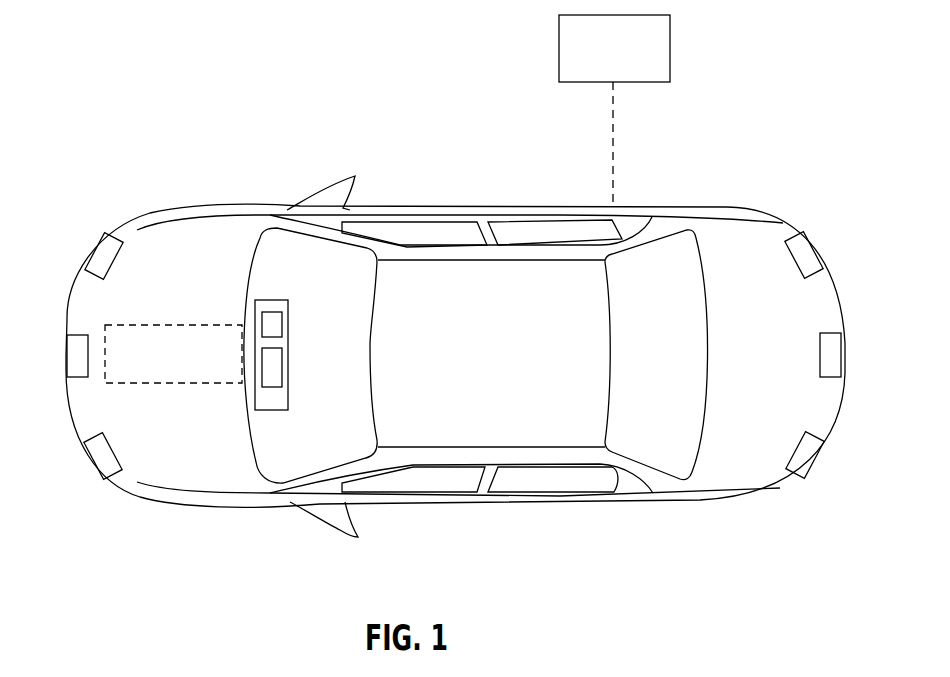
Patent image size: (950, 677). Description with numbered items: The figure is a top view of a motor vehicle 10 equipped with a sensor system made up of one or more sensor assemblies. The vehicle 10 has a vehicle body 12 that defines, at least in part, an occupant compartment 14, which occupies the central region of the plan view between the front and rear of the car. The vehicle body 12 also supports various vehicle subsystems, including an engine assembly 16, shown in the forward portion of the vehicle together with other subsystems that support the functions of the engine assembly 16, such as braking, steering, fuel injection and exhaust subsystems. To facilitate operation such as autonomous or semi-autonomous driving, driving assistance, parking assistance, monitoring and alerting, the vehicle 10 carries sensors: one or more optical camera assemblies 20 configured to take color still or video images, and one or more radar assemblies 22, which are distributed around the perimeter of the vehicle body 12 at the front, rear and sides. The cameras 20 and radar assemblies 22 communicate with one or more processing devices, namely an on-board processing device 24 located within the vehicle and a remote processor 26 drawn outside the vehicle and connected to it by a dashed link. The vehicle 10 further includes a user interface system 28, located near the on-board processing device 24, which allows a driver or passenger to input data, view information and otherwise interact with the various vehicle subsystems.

The motor vehicle 10 is at (272, 209).
The vehicle body 12 is at (700, 480).
The occupant compartment 14 is at (510, 433).
The engine assembly 16 is at (157, 325).
The optical camera assembly 20 is at (431, 175).
The radar assembly 22 is at (100, 253).
The on-board processing device 24 is at (272, 323).
The remote processor 26 is at (672, 48).
The user interface system 28 is at (272, 368).